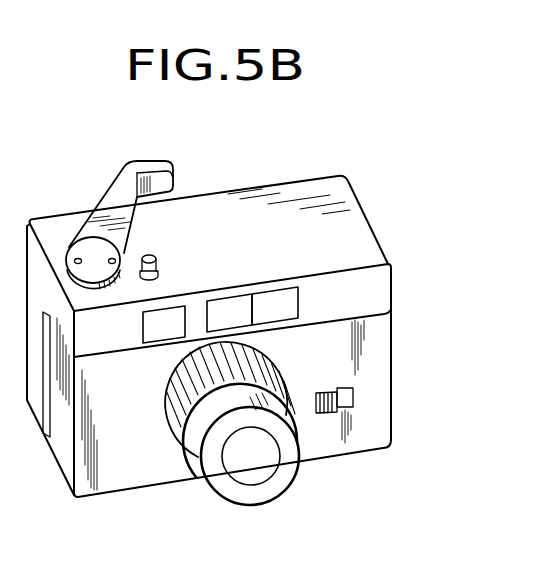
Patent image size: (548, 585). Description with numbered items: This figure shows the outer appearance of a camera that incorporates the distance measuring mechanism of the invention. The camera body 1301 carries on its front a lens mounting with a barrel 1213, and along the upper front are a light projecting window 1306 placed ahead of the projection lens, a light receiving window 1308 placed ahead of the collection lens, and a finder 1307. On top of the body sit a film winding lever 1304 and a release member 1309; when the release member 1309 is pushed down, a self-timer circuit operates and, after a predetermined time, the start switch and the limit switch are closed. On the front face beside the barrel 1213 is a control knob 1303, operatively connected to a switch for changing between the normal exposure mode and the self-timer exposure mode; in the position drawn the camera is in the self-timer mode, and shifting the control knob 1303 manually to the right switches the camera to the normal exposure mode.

The camera body 1301 is at (372, 360).
The control knob 1303 is at (353, 395).
The film winding lever 1304 is at (139, 172).
The light projecting window 1306 is at (171, 313).
The finder 1307 is at (274, 300).
The light receiving window 1308 is at (227, 304).
The release member 1309 is at (152, 256).
The barrel 1213 is at (267, 485).